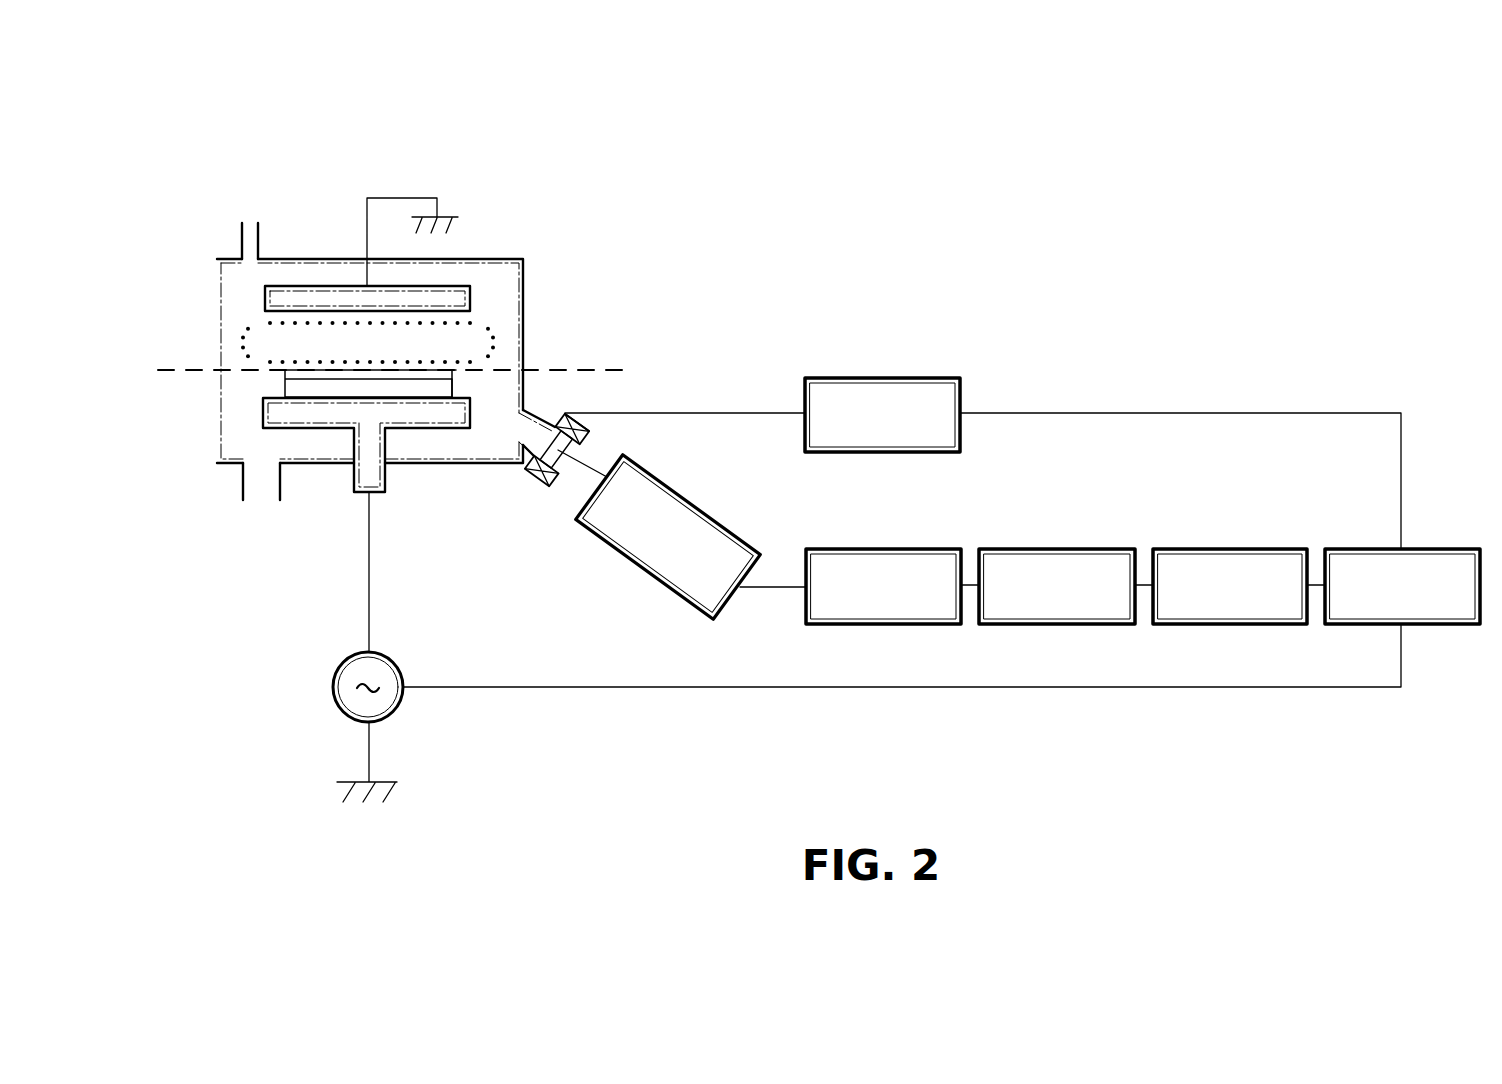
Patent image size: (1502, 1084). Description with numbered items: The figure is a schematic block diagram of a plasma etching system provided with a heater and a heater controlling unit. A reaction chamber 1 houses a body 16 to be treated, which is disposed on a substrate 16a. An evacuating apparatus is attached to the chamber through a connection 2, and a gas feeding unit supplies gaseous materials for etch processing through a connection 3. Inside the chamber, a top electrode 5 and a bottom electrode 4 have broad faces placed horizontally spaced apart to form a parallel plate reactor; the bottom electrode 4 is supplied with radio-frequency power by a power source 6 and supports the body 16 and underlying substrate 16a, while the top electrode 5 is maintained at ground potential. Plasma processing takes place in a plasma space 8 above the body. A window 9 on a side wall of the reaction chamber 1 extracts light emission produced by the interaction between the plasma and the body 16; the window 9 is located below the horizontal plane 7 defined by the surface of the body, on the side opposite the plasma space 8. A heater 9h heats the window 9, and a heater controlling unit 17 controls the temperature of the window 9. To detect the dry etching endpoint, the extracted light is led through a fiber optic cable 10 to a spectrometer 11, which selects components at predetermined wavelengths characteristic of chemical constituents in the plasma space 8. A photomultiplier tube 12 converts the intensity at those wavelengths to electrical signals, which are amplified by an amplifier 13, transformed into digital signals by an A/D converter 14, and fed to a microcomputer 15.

The reaction chamber 1 is at (523, 278).
The connection 2 is at (263, 488).
The connection 3 is at (252, 232).
The bottom electrode 4 is at (471, 412).
The top electrode 5 is at (447, 287).
The power source 6 is at (340, 709).
The horizontal plane 7 is at (562, 370).
The plasma space 8 is at (260, 330).
The window 9 is at (558, 446).
The heater 9h is at (588, 438).
The fiber optic cable 10 is at (573, 467).
The spectrometer 11 is at (703, 505).
The photomultiplier tube 12 is at (912, 548).
The amplifier 13 is at (1085, 548).
The A/D converter 14 is at (1257, 548).
The microcomputer 15 is at (1430, 548).
The body 16 is at (288, 380).
The substrate 16a is at (453, 386).
The heater controlling unit 17 is at (907, 378).